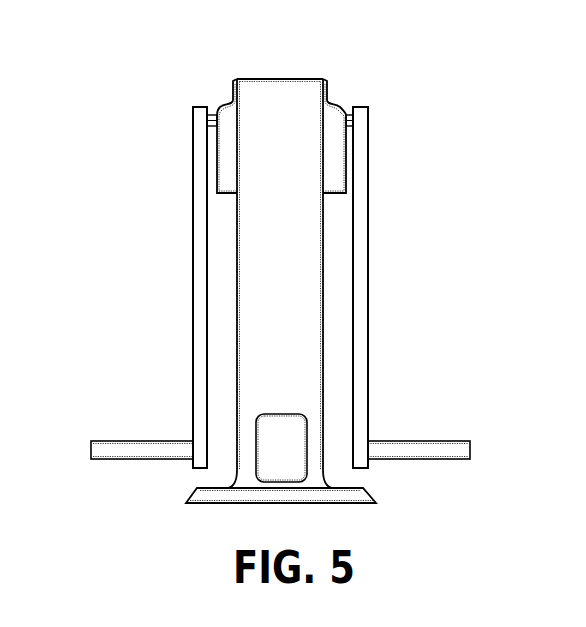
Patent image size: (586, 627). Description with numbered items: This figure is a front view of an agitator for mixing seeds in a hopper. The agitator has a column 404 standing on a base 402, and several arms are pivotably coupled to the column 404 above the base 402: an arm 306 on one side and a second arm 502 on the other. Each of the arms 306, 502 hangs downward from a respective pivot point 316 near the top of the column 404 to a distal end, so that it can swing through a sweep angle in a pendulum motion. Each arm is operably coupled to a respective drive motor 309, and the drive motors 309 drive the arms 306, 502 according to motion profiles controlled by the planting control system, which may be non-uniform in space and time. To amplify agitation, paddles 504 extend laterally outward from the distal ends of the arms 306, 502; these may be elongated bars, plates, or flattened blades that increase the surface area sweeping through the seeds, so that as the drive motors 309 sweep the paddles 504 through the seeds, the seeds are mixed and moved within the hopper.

The drive motor 309 is at (229, 101).
The pivot point 316 is at (210, 121).
The arm 306 is at (202, 308).
The second arm 502 is at (360, 353).
The column 404 is at (298, 258).
The paddle 504 is at (113, 445).
The base 402 is at (358, 495).